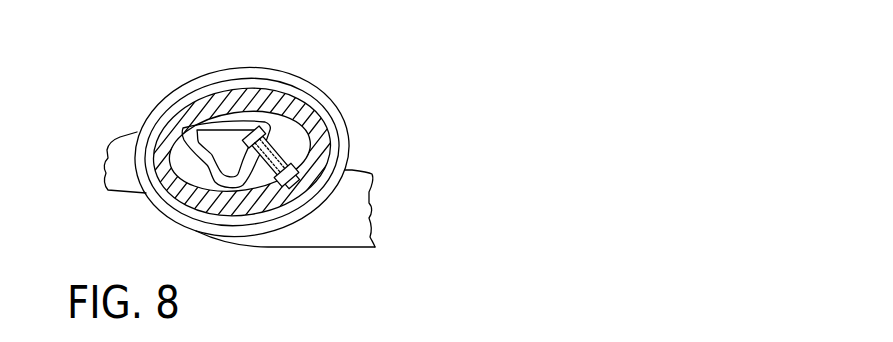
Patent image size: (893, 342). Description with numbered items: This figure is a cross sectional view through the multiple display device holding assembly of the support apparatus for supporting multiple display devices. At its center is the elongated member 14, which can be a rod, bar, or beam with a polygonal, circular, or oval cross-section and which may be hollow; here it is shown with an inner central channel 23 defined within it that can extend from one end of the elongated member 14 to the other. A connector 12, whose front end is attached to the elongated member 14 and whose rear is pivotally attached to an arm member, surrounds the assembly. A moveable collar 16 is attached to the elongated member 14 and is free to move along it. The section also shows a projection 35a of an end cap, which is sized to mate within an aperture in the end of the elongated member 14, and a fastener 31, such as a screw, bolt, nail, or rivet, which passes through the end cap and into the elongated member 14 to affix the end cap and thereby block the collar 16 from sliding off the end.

The connector 12 is at (363, 203).
The elongated member 14 is at (160, 186).
The collar 16 is at (267, 70).
The inner central channel 23 is at (213, 138).
The fastener 31 is at (292, 151).
The projection 35a is at (303, 95).